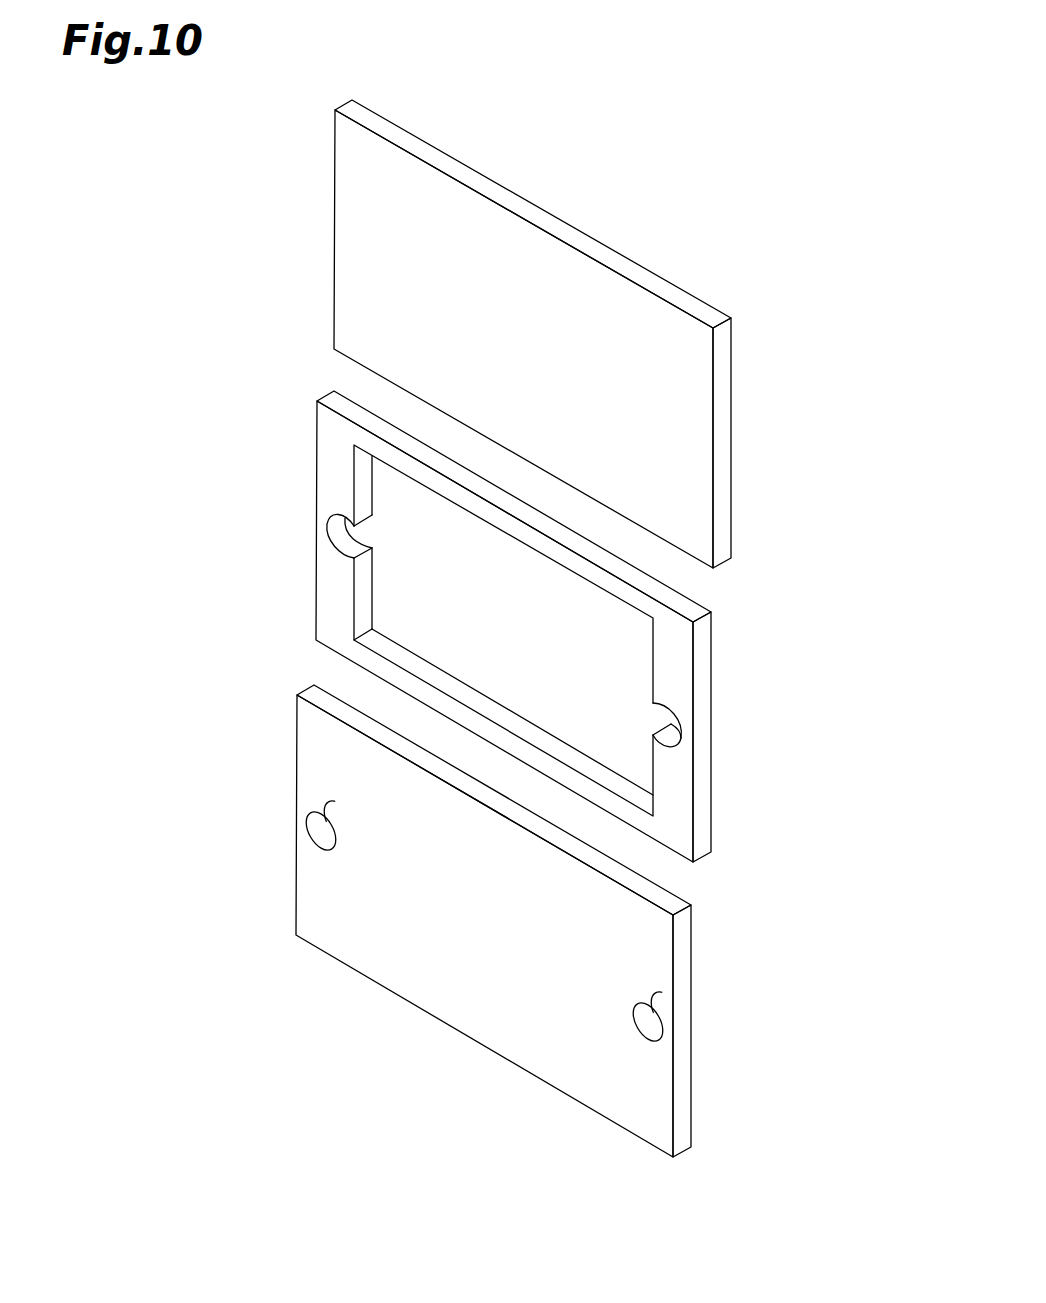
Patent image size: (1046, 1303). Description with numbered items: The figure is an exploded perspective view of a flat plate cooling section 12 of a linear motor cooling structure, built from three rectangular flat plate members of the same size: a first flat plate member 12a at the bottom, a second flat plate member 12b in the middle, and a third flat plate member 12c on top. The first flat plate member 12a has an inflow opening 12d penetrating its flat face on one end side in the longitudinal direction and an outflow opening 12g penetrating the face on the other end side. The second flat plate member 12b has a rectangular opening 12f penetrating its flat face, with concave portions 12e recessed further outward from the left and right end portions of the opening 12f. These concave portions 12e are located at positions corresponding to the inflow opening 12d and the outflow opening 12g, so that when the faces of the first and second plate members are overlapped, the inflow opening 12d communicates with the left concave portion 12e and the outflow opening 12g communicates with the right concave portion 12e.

The flat plate cooling section 12 is at (773, 240).
The first flat plate member 12a is at (652, 948).
The second flat plate member 12b is at (676, 622).
The third flat plate member 12c is at (530, 247).
The inflow opening 12d is at (320, 828).
The concave portion 12e is at (347, 540).
The opening 12f is at (542, 578).
The outflow opening 12g is at (657, 1038).